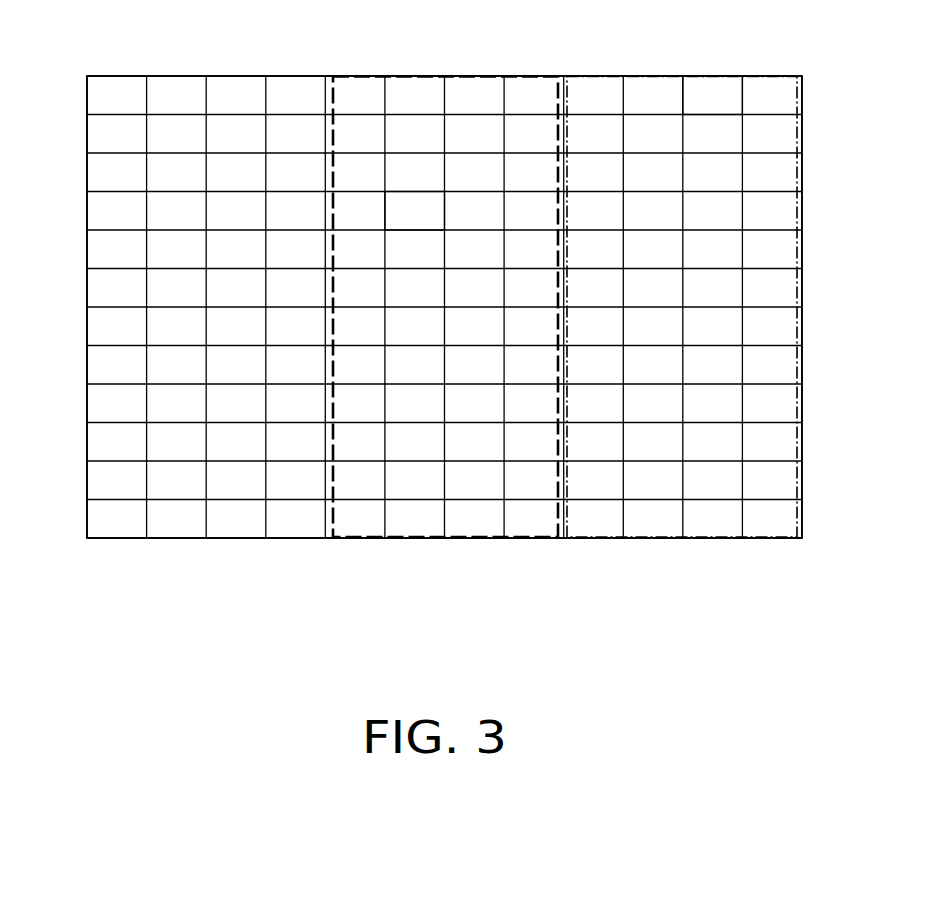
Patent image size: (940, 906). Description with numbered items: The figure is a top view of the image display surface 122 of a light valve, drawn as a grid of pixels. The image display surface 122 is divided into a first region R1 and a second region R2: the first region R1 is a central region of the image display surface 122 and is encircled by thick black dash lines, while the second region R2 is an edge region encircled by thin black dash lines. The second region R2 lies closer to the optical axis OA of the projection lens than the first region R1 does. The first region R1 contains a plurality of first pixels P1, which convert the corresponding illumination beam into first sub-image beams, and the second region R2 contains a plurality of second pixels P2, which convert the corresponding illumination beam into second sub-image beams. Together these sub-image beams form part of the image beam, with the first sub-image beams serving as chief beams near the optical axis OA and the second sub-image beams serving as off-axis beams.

The image display surface 122 is at (911, 604).
The first region R1 is at (487, 66).
The second region R2 is at (767, 66).
The first pixel P1 is at (415, 203).
The second pixel P2 is at (716, 97).
The optical axis OA is at (871, 283).